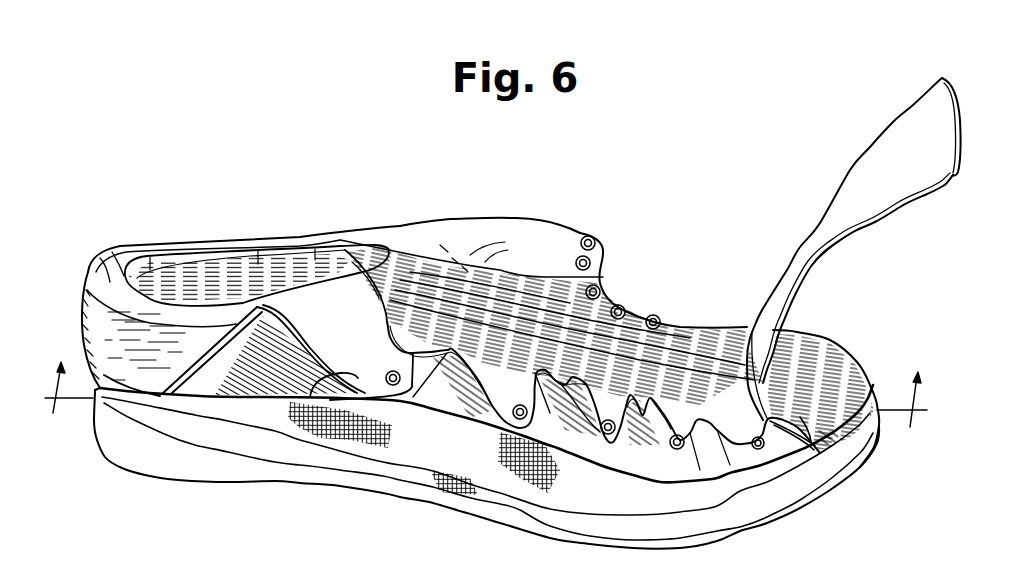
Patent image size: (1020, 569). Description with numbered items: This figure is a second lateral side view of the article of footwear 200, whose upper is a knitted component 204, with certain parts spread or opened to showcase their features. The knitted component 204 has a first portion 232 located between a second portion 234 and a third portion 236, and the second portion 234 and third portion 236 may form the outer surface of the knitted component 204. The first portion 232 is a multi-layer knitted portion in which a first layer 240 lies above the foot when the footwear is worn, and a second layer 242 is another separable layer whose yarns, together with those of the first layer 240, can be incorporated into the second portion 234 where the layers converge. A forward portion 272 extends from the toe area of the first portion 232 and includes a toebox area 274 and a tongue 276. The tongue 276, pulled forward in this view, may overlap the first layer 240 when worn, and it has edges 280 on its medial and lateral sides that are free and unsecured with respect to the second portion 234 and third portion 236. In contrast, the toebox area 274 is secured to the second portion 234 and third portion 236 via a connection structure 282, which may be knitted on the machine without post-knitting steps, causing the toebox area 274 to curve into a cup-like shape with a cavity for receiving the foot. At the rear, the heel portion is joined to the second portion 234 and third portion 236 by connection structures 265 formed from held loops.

The article of footwear 200 is at (184, 183).
The knitted component 204 is at (433, 230).
The first portion 232 is at (670, 350).
The second portion 234 is at (340, 370).
The third portion 236 is at (560, 233).
The first layer 240 is at (383, 285).
The second layer 242 is at (263, 292).
The connection structures 265 is at (88, 263).
The forward portion 272 is at (817, 227).
The toebox area 274 is at (823, 360).
The tongue 276 is at (905, 123).
The edges 280 is at (875, 222).
The connection structure 282 is at (815, 448).